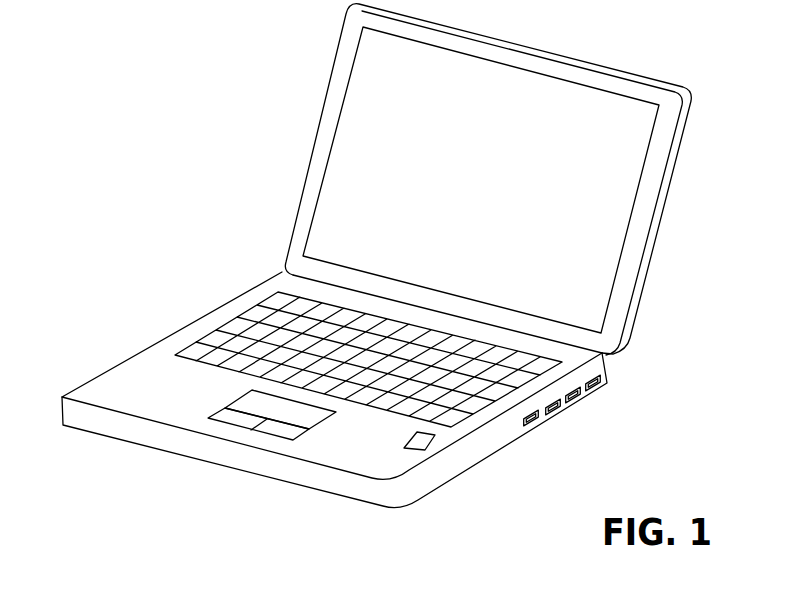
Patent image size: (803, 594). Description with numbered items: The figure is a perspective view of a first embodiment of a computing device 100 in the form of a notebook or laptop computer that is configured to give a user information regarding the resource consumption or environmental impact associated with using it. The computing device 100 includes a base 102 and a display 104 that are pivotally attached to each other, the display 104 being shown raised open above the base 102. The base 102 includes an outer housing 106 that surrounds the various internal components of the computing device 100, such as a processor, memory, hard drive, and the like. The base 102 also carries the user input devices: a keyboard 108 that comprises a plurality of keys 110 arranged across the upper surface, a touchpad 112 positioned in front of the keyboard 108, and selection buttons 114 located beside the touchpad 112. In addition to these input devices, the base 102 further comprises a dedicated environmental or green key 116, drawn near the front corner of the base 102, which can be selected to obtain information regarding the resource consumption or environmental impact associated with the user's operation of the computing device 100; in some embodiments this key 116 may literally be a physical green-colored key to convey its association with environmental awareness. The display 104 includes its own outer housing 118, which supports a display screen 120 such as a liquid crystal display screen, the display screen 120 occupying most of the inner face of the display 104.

The computing device 100 is at (368, 263).
The base 102 is at (326, 389).
The display 104 is at (474, 179).
The outer housing 106 is at (103, 427).
The keyboard 108 is at (202, 315).
The keys 110 is at (345, 318).
The touchpad 112 is at (247, 406).
The selection buttons 114 is at (262, 433).
The green key 116 is at (430, 440).
The outer housing 118 is at (297, 217).
The display screen 120 is at (502, 192).